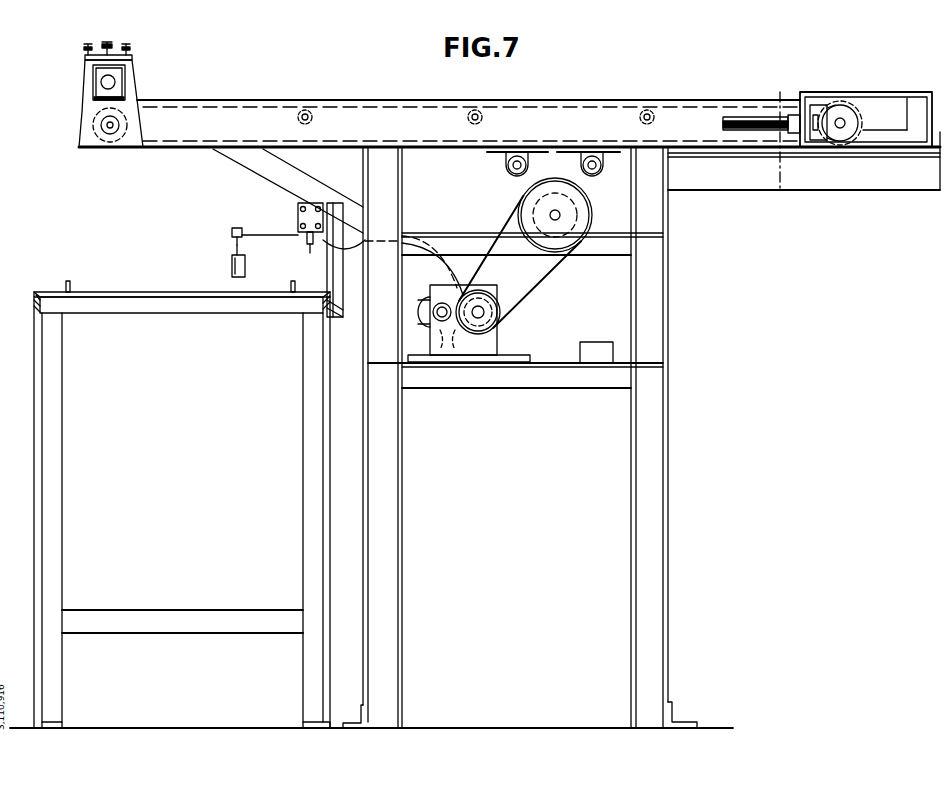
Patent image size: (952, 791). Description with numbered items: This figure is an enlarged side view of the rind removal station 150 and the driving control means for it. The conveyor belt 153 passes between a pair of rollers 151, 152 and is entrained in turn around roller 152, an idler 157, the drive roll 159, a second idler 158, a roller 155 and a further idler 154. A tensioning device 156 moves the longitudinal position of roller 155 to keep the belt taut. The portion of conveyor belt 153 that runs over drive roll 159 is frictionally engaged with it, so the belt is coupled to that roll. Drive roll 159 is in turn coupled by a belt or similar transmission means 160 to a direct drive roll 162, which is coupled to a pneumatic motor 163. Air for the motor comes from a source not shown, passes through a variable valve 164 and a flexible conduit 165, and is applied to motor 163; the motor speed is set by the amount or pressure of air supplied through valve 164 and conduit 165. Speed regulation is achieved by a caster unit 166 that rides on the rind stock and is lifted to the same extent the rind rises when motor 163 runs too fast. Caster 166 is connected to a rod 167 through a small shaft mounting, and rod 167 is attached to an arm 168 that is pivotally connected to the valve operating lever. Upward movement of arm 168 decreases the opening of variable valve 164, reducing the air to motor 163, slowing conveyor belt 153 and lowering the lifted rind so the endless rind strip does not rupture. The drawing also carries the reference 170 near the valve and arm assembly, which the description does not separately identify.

The rind removal station 150 is at (165, 78).
The roller 151 is at (93, 97).
The roller 152 is at (101, 129).
The conveyor belt 153 is at (236, 103).
The idler 154 is at (309, 114).
The roller 155 is at (857, 108).
The tensioning device 156 is at (791, 114).
The idler 157 is at (508, 176).
The idler 158 is at (601, 177).
The drive roll 159 is at (592, 216).
The belt or similar transmission means 160 is at (539, 283).
The direct drive roll 162 is at (485, 336).
The pneumatic motor 163 is at (443, 345).
The variable valve 164 is at (298, 210).
The flexible conduit 165 is at (331, 257).
The caster unit 166 is at (232, 265).
The rod 167 is at (231, 234).
The arm 168 is at (268, 238).
The switch assembly 170 is at (252, 226).